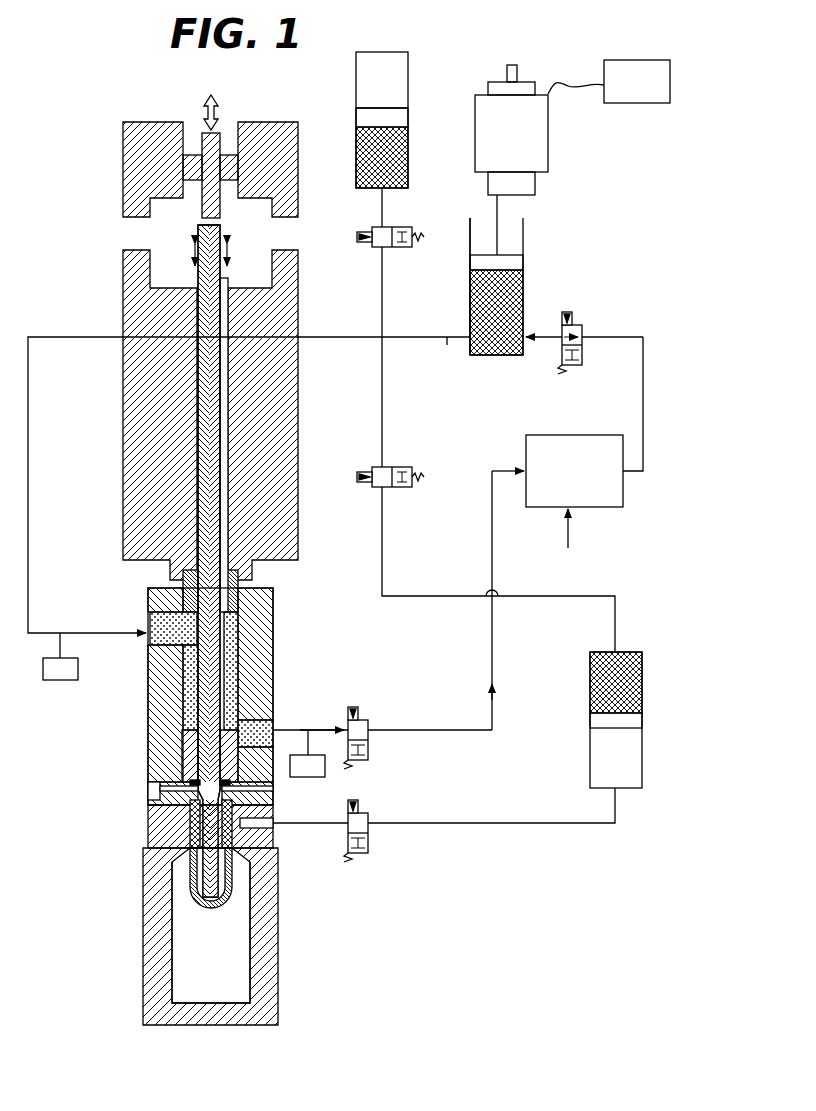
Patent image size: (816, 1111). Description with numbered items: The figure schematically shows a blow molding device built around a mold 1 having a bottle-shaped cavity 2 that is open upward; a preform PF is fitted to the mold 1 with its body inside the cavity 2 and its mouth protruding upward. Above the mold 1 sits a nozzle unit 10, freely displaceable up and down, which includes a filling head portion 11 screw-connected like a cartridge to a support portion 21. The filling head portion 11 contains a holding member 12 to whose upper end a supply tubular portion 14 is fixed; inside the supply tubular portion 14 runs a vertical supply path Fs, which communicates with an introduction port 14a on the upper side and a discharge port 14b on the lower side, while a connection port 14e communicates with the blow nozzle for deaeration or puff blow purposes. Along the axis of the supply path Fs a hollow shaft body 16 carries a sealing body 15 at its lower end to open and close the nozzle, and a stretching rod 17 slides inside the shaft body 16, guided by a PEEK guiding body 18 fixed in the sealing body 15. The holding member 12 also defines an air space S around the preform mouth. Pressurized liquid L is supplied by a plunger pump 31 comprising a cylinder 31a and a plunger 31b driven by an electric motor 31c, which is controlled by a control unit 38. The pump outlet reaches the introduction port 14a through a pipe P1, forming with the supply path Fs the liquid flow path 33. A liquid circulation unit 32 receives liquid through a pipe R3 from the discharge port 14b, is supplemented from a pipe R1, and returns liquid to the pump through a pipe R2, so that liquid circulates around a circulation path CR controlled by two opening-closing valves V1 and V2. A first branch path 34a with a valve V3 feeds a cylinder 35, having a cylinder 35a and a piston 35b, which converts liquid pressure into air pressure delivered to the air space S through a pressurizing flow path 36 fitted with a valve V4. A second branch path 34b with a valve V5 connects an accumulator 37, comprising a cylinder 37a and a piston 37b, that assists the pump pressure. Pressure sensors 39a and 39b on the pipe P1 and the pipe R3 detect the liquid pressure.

The mold 1 is at (260, 972).
The cavity 2 is at (245, 990).
The nozzle unit 10 is at (100, 208).
The filling head portion 11 is at (275, 672).
The holding member 12 is at (165, 822).
The supply tubular portion 14 is at (165, 745).
The introduction port 14a is at (165, 620).
The discharge port 14b is at (268, 724).
The connection port 14e is at (150, 790).
The sealing body 15 is at (183, 735).
The shaft body 16 is at (200, 430).
The stretching rod 17 is at (225, 465).
The guiding body 18 is at (240, 790).
The support portion 21 is at (300, 390).
The plunger pump 31 is at (532, 223).
The cylinder 31a is at (523, 242).
The plunger 31b is at (512, 266).
The electric motor 31c is at (548, 134).
The liquid circulation unit 32 is at (602, 509).
The liquid flow path 33 is at (322, 337).
The first branch path 34a is at (382, 440).
The second branch path 34b is at (382, 298).
The cylinder for conversion to air for the outside of the mouth 35 is at (648, 690).
The cylinder 35a is at (642, 668).
The piston 35b is at (635, 722).
The pressurizing flow path 36 is at (545, 823).
The accumulator 37 is at (412, 82).
The cylinder 37a is at (356, 90).
The piston 37b is at (398, 118).
The control unit 38 is at (640, 103).
The pressure sensor 39a is at (60, 682).
The pressure sensor 39b is at (320, 768).
The opening-closing valve of the circulation path V1 is at (584, 356).
The opening-closing valve of the circulation path V2 is at (370, 746).
The opening-closing valve of the cylinder V3 is at (402, 468).
The opening-closing valve for pressurizing air outside the mouth V4 is at (370, 850).
The opening-closing valve of the accumulator V5 is at (402, 228).
The liquid L is at (480, 292).
The supply path Fs is at (233, 690).
The pipe P1 is at (447, 345).
The pipe R1 is at (569, 542).
The pipe R2 is at (643, 384).
The pipe R3 is at (492, 659).
The circulation path CR is at (496, 690).
The air space S is at (255, 835).
The preform PF is at (237, 880).